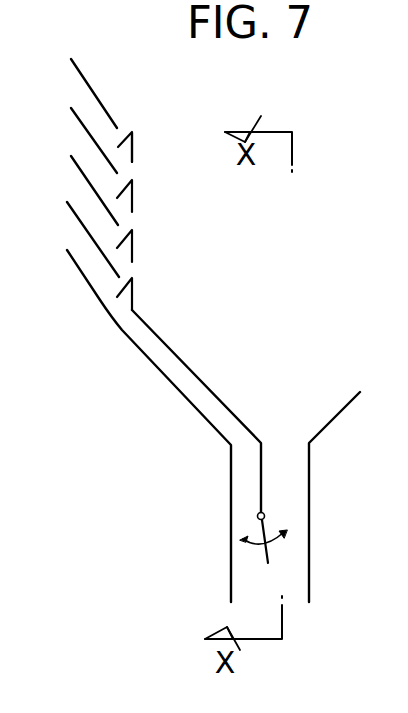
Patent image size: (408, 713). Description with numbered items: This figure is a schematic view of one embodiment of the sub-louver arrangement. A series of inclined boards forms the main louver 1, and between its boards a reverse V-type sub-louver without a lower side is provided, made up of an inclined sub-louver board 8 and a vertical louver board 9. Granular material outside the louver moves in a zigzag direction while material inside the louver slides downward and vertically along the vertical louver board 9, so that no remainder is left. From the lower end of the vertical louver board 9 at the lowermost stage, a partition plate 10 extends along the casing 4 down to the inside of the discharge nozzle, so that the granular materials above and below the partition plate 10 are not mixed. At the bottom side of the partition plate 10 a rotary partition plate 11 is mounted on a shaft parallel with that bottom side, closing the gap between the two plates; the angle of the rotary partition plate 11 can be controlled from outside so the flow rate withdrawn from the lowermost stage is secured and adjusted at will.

The main louver 1 is at (86, 82).
The sub-louver board 8 is at (121, 130).
The vertical louver board 9 is at (133, 147).
The partition plate 10 is at (184, 362).
The casing 4 is at (187, 398).
The rotary partition plate 11 is at (267, 560).